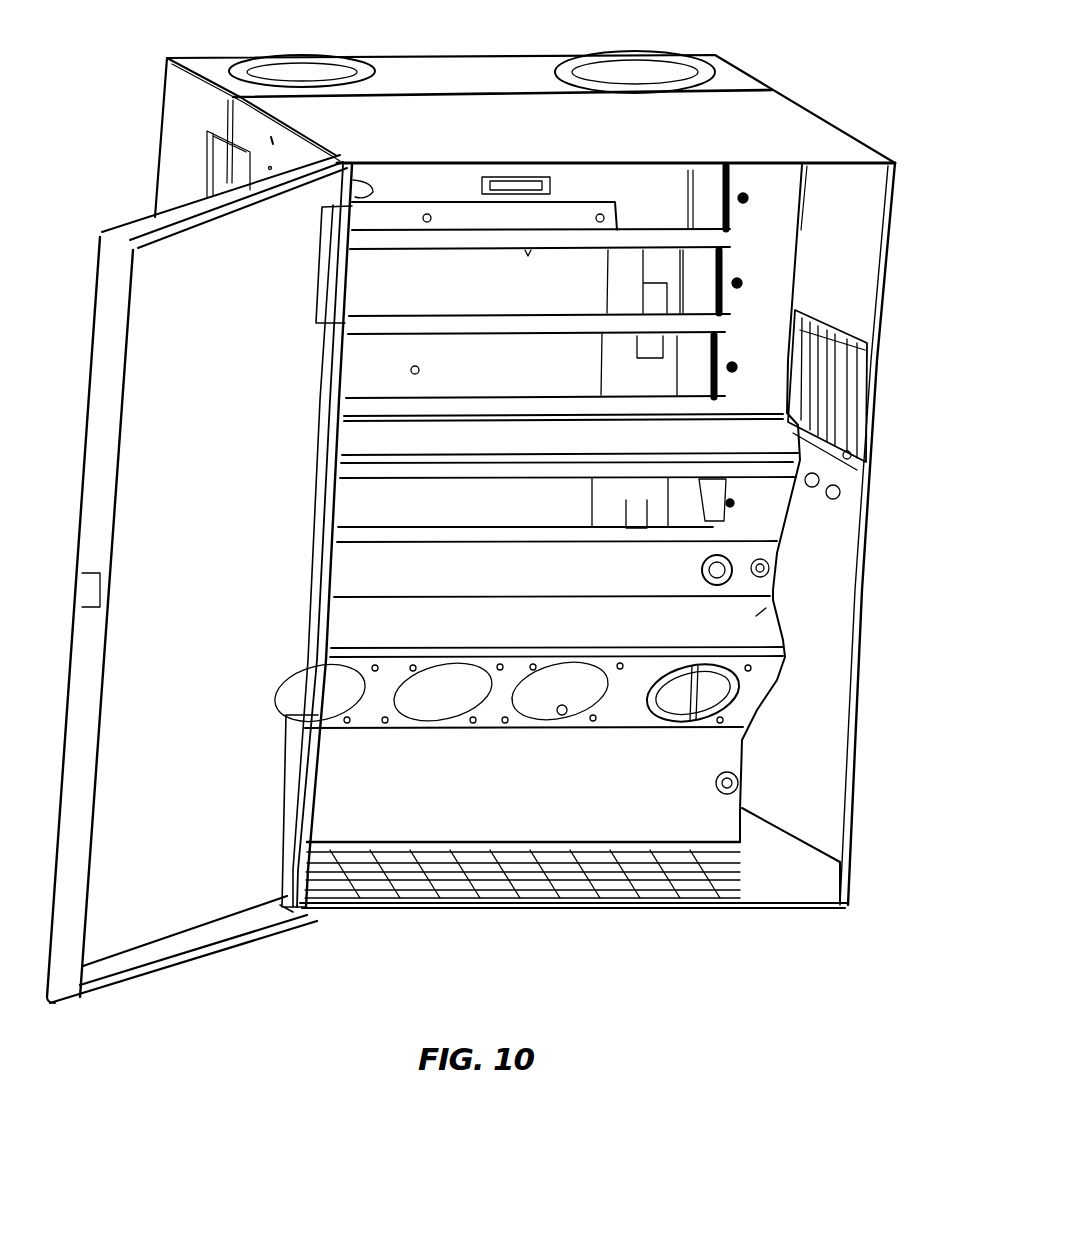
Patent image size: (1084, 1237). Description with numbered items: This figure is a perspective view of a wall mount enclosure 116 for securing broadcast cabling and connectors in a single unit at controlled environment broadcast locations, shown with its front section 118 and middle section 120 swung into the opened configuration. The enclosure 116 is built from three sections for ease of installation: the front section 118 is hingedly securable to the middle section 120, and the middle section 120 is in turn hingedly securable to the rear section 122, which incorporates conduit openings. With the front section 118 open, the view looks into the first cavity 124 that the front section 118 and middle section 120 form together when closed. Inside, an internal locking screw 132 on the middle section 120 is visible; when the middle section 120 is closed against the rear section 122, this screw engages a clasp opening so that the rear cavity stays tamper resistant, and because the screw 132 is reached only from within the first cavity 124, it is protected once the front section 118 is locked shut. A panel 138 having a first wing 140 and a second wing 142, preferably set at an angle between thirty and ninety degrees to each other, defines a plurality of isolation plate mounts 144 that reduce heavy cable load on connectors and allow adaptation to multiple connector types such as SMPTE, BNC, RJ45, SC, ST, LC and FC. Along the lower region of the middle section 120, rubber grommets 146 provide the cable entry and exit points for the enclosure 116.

The wall mount enclosure 116 is at (801, 53).
The front section 118 is at (138, 223).
The middle section 120 is at (795, 131).
The rear section 122 is at (402, 71).
The first cavity 124 is at (852, 263).
The internal locking screw 132 is at (723, 560).
The panel 138 is at (763, 632).
The first wing 140 is at (757, 690).
The second wing 142 is at (760, 613).
The isolation plate mounts 144 is at (362, 705).
The rubber grommets 146 is at (494, 910).